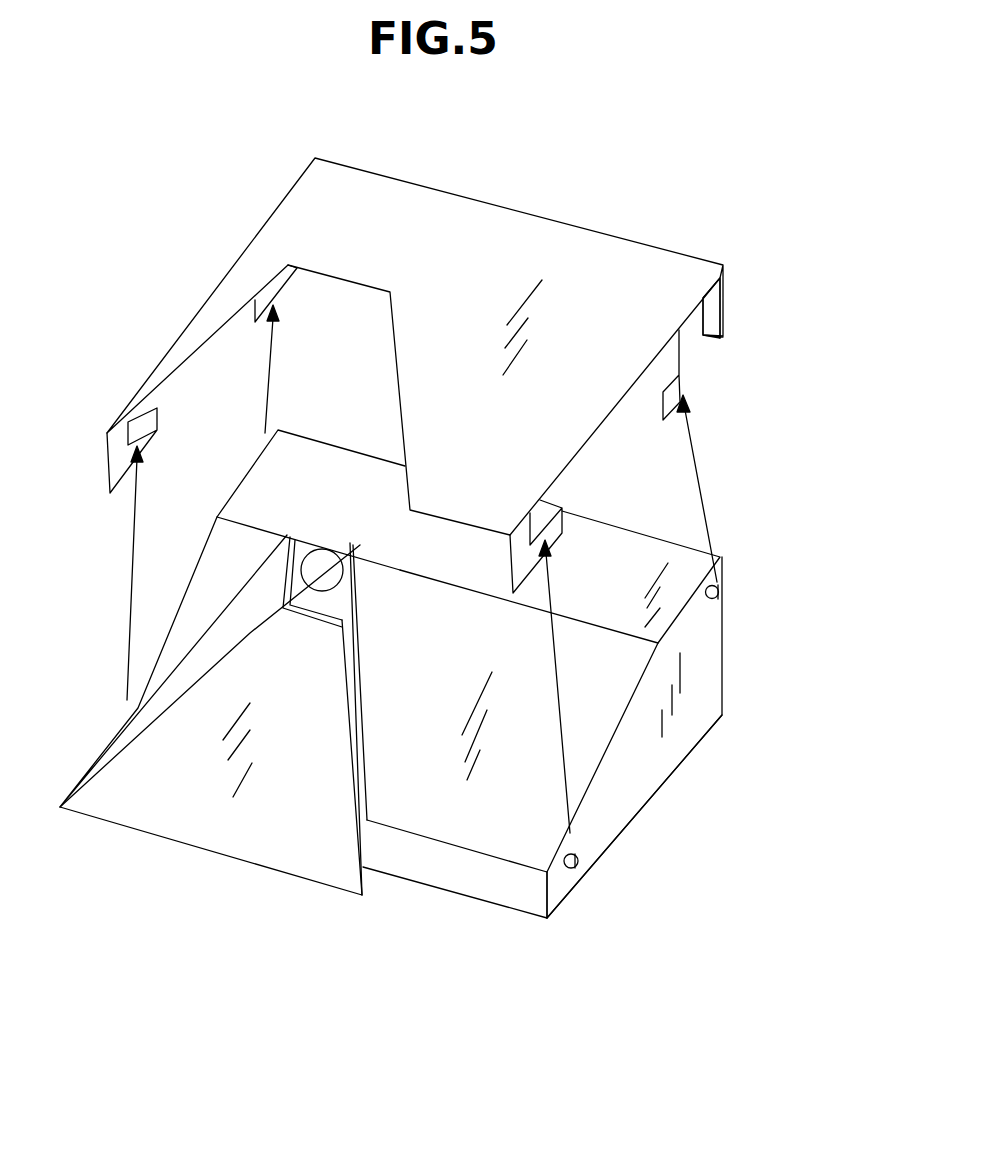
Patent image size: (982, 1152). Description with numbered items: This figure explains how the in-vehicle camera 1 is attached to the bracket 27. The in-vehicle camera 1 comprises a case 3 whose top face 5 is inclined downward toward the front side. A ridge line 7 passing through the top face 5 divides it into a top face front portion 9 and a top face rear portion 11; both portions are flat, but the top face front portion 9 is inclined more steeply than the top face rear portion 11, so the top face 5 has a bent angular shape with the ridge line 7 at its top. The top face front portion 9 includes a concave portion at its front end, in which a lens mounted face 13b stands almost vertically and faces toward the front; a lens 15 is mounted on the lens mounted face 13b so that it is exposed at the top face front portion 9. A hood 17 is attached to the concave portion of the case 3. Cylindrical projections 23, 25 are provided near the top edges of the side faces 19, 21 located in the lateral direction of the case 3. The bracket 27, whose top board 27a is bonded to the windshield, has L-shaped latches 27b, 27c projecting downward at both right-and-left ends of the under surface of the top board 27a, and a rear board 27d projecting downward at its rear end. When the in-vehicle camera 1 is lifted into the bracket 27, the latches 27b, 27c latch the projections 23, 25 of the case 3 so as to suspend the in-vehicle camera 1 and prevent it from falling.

The in-vehicle camera 1 is at (702, 667).
The case 3 is at (643, 808).
The top face 5 is at (625, 548).
The ridge line 7 is at (450, 590).
The top face front portion 9 is at (460, 823).
The top face rear portion 11 is at (338, 466).
The lens mounted face 13b is at (320, 563).
The lens 15 is at (352, 545).
The hood 17 is at (248, 837).
The side face 19 is at (673, 727).
The side face 21 is at (200, 553).
The cylindrical projection 23 is at (578, 862).
The cylindrical projection 25 is at (728, 592).
The bracket 27 is at (573, 227).
The top board 27a is at (480, 245).
The latch 27b is at (107, 463).
The latch 27c is at (273, 285).
The rear board 27d is at (725, 308).